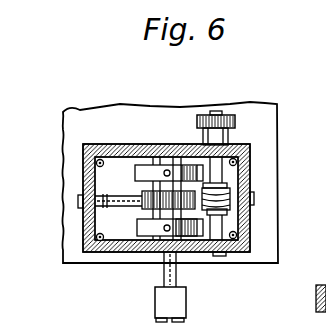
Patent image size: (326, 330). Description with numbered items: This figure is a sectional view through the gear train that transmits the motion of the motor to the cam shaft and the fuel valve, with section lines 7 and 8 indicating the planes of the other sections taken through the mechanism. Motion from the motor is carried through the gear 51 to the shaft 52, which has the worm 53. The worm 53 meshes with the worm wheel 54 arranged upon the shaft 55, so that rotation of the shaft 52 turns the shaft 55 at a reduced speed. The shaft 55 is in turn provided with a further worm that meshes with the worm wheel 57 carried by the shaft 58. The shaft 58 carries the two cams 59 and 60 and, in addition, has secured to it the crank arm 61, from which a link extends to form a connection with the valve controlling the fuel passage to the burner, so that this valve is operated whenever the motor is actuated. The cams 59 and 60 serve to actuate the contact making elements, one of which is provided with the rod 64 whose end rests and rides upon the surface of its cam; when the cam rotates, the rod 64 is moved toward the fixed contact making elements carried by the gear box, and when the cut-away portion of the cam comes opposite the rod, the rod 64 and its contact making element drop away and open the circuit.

The section line 7- 7 is at (65, 182).
The section line 8- 8 is at (188, 110).
The gear 51 is at (235, 118).
The shaft 52 is at (237, 160).
The worm 53 is at (252, 212).
The worm wheel 54 is at (238, 230).
The shaft 55 is at (115, 192).
The worm wheel 57 is at (153, 228).
The shaft 58 is at (165, 278).
The cam 59 is at (143, 167).
The cam 60 is at (141, 232).
The crank arm 61 is at (156, 303).
The rod 64 is at (184, 239).